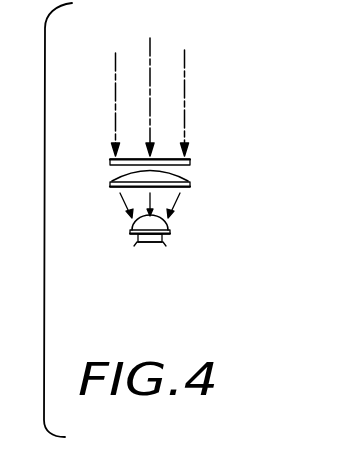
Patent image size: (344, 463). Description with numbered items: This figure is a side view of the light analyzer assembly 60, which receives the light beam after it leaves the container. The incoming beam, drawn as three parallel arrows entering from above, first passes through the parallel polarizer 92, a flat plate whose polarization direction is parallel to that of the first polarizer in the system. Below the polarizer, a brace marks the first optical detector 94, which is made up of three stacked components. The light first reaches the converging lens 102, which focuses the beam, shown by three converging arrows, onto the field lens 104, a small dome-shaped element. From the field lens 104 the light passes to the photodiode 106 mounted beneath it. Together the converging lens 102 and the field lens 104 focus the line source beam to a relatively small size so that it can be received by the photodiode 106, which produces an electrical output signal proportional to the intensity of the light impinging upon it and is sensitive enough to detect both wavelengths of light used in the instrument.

The light analyzer assembly 60 is at (208, 141).
The parallel polarizer 92 is at (190, 163).
The first optical detector 94 is at (105, 173).
The converging lens 102 is at (190, 180).
The field lens 104 is at (170, 228).
The photodiode 106 is at (166, 240).